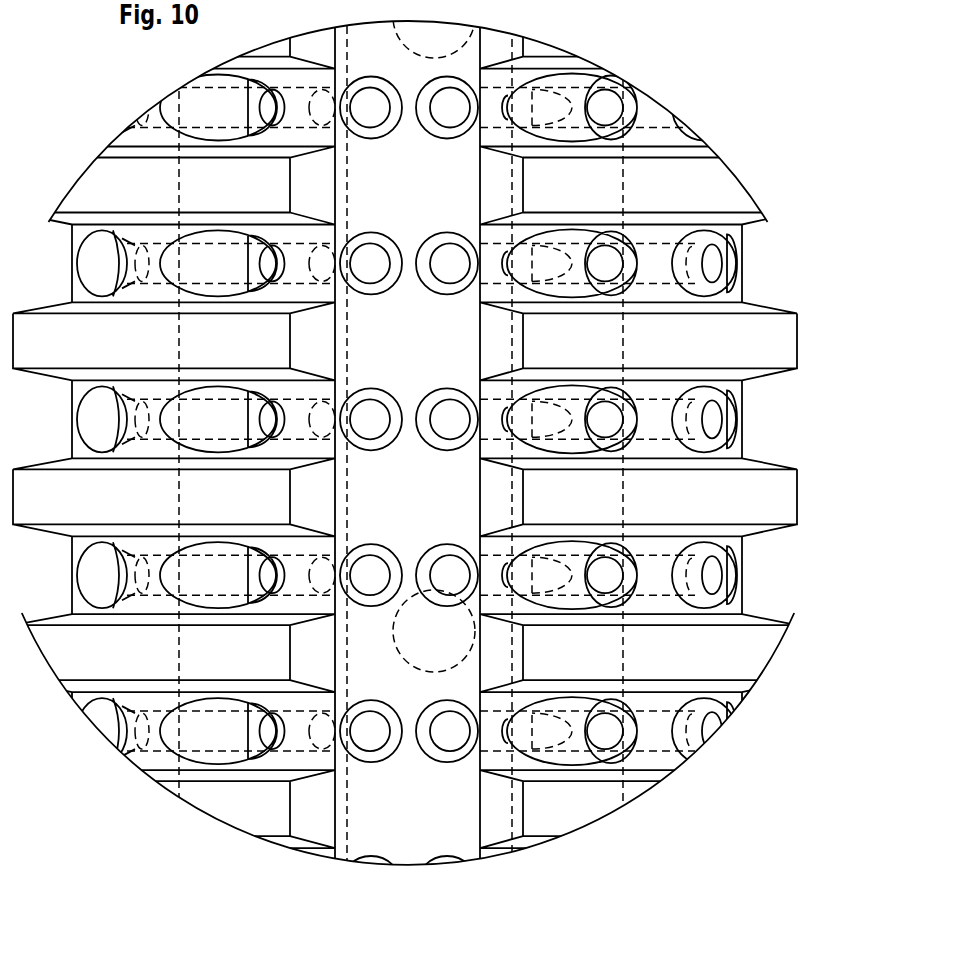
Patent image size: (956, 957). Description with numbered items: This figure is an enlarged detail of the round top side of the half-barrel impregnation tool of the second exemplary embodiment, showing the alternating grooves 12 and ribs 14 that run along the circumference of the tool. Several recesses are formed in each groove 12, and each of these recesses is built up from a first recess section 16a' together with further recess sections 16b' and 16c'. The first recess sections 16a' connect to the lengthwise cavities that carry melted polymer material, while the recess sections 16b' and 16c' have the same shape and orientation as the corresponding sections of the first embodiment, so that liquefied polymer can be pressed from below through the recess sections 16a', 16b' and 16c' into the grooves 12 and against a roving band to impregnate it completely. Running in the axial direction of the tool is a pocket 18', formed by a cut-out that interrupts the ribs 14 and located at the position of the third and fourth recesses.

The groove 12 is at (780, 280).
The rib 14 is at (759, 503).
The first recess section 16a' is at (569, 237).
The recess section 16b' is at (622, 394).
The recess section 16c' is at (611, 549).
The pocket 18' is at (407, 478).